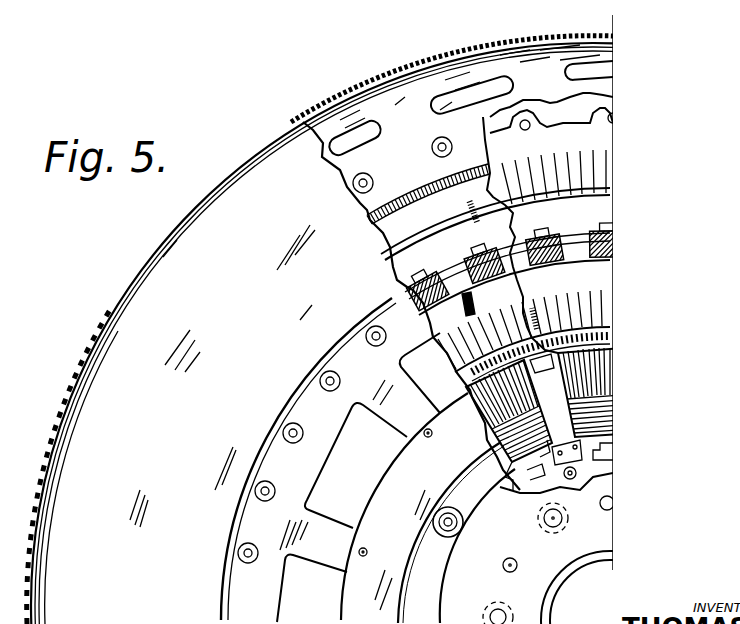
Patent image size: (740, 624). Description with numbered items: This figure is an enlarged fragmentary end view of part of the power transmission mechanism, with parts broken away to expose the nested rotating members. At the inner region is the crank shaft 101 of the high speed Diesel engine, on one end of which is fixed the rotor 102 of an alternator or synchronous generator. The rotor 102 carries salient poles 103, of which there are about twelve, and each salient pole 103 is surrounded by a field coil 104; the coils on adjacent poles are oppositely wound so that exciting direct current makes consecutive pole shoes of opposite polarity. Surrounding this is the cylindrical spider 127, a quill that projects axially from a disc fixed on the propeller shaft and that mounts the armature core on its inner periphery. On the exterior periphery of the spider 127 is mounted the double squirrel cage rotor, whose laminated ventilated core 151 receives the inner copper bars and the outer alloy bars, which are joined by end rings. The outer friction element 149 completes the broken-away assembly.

The friction facing ring 149 is at (608, 150).
The laminated ventilated core 151 is at (612, 215).
The cylindrical spider 127 is at (613, 243).
The salient pole 103 is at (597, 371).
The field coil 104 is at (607, 390).
The rotor 102 is at (593, 475).
The crank shaft 101 is at (610, 537).